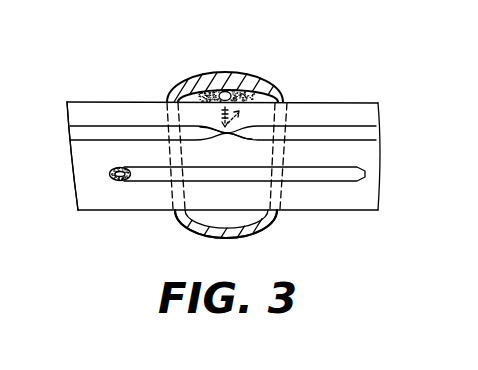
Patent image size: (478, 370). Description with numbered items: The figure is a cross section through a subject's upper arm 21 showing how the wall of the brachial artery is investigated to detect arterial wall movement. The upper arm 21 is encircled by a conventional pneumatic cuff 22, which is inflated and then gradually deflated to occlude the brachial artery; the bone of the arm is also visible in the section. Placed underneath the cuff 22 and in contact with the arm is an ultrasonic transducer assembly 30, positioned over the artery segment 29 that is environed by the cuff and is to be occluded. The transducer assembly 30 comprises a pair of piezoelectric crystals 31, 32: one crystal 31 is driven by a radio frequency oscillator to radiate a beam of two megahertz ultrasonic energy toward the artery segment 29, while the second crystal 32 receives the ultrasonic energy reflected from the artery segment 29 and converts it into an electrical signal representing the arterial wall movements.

The upper arm 21 is at (78, 109).
The pneumatic cuff 22 is at (183, 229).
The artery segment 29 is at (226, 138).
The ultrasonic transducer assembly 30 is at (273, 50).
The piezoelectric crystal 31 is at (222, 91).
The piezoelectric crystal 32 is at (245, 103).